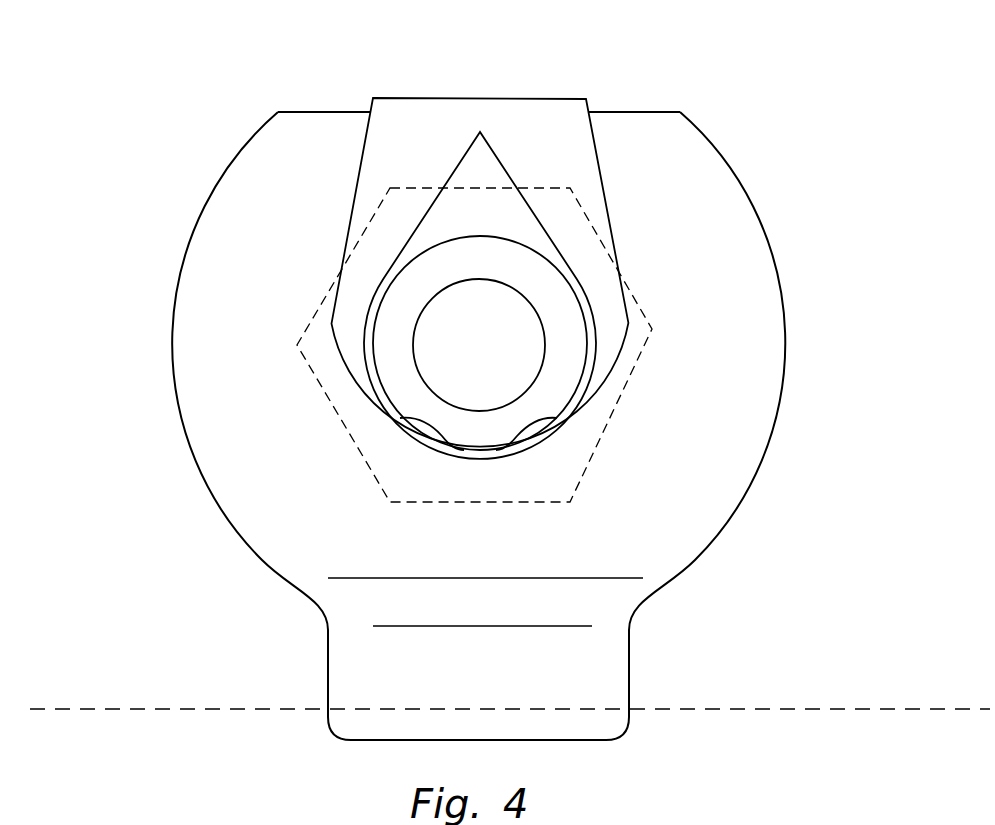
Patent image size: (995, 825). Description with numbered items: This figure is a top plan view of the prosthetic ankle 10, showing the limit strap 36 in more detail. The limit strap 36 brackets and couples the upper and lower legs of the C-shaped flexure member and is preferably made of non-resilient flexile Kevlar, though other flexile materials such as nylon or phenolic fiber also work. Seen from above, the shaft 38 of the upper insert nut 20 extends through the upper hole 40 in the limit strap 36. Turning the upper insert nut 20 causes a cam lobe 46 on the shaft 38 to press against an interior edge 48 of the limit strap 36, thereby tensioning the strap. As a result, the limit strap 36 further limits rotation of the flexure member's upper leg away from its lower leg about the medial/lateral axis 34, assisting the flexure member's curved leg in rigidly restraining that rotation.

The prosthetic ankle 10 is at (309, 107).
The upper insert nut 20 is at (652, 329).
The medial/lateral axis 34 is at (283, 709).
The limit strap 36 is at (533, 108).
The shaft of the upper insert nut 38 is at (578, 360).
The upper hole 40 is at (495, 207).
The cam lobe 46 is at (465, 438).
The interior edge 48 is at (526, 439).